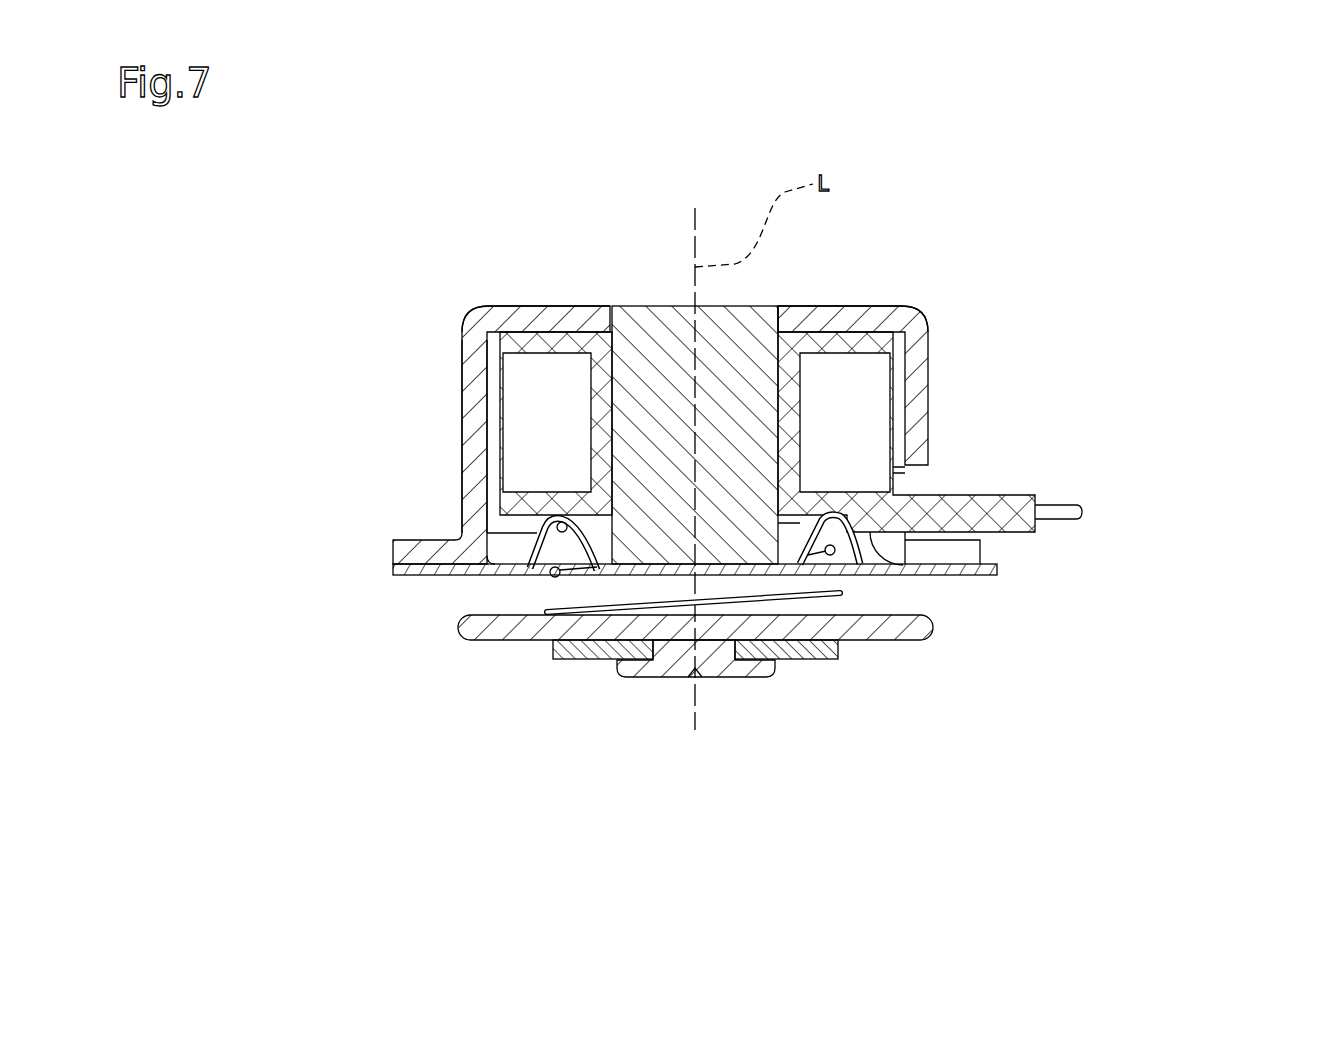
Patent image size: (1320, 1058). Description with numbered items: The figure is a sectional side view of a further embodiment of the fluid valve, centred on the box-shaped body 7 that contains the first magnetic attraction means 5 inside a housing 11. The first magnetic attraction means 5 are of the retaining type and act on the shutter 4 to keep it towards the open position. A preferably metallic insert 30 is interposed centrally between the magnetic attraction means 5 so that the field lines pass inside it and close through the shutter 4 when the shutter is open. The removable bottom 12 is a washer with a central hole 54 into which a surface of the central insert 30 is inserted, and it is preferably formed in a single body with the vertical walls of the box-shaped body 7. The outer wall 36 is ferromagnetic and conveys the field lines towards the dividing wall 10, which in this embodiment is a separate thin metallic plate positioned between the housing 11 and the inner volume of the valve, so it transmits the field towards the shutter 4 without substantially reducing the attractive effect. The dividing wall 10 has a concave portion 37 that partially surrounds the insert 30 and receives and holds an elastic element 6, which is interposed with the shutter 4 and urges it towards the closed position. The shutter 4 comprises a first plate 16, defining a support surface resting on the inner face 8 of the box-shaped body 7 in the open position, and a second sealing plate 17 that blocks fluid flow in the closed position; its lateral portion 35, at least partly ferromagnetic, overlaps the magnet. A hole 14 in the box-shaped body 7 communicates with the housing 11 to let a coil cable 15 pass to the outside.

The box-shaped body 7 is at (1133, 187).
The housing 11 is at (487, 420).
The removable bottom 12 is at (530, 322).
The outer wall 36 is at (470, 470).
The insert 30 is at (655, 332).
The central hole 54 is at (778, 307).
The first magnetic attraction means 5 is at (860, 375).
The hole 14 is at (945, 477).
The cable 15 is at (1067, 512).
The concave portion 37 is at (553, 550).
The dividing wall 10 is at (997, 576).
The inner face 8 is at (963, 592).
The elastic element 6 is at (852, 612).
The shutter 4 is at (625, 730).
The first plate 16 is at (523, 638).
The second sealing plate 17 is at (557, 661).
The lateral portion 35 is at (853, 648).